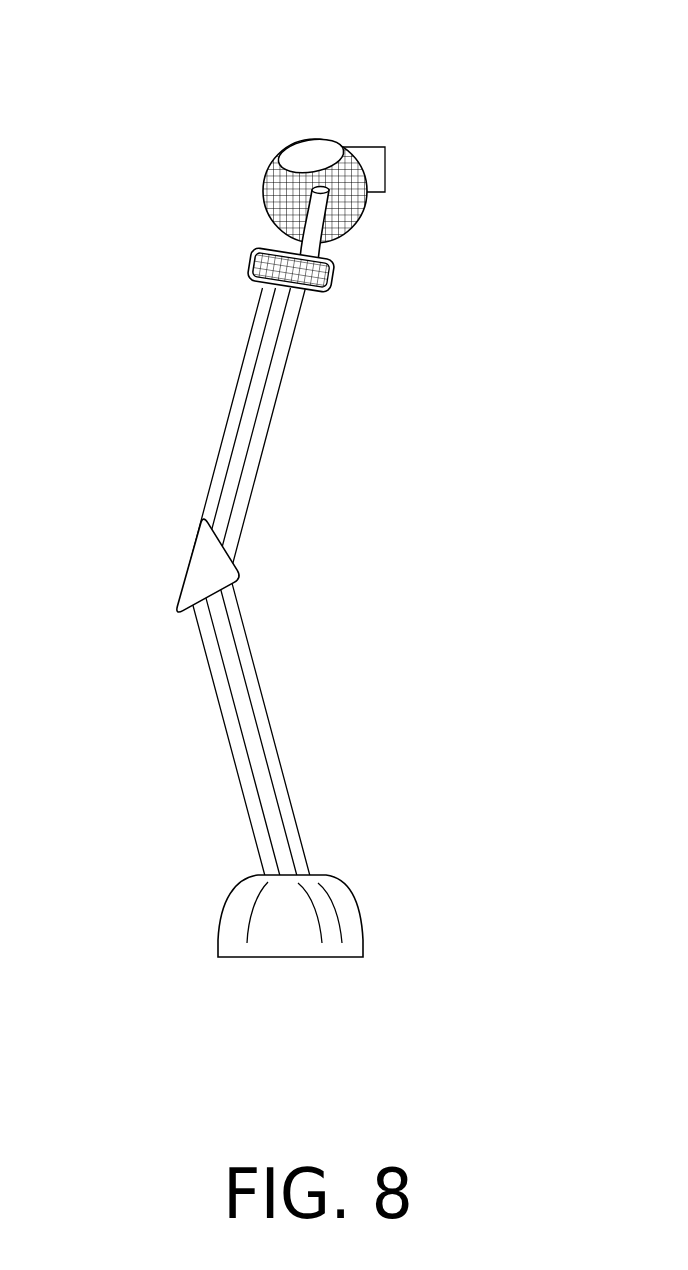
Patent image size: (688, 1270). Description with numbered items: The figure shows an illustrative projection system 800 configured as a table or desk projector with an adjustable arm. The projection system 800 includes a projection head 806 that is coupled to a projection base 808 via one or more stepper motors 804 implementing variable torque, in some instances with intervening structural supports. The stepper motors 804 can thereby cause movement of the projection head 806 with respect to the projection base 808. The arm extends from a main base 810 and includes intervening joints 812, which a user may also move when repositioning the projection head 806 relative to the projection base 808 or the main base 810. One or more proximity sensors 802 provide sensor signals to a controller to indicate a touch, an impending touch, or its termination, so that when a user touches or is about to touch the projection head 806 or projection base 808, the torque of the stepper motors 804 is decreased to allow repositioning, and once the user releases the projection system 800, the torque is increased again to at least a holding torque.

The projection system 800 is at (563, 55).
The proximity sensors 802 is at (248, 242).
The stepper motors 804 is at (336, 252).
The projection head 806 is at (287, 155).
The projection base 808 is at (250, 268).
The main base 810 is at (375, 922).
The intervening joints 812 is at (126, 558).